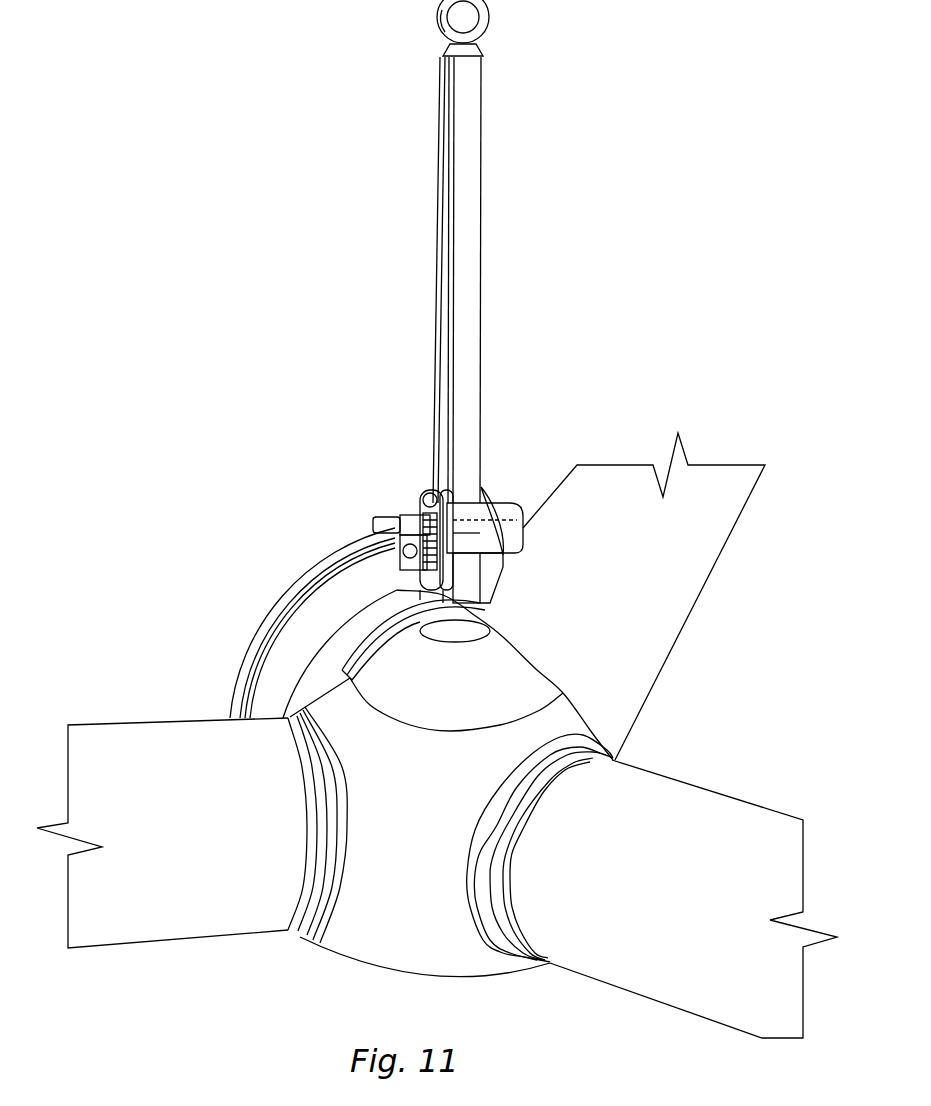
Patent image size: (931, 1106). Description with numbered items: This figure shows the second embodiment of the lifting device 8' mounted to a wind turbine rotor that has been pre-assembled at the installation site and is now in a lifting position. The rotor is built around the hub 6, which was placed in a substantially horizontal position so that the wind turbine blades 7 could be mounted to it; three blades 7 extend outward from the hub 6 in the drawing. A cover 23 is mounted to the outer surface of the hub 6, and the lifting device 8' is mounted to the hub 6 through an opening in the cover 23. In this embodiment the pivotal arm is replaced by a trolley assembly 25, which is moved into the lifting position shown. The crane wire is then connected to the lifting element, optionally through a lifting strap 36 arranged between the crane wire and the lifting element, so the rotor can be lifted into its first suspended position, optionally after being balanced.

The lifting strap 36 is at (472, 284).
The trolley assembly 25 is at (515, 481).
The lifting device 8' is at (299, 623).
The wind turbine blades 7 is at (635, 584).
The hub 6 is at (437, 821).
The cover 23 is at (385, 945).